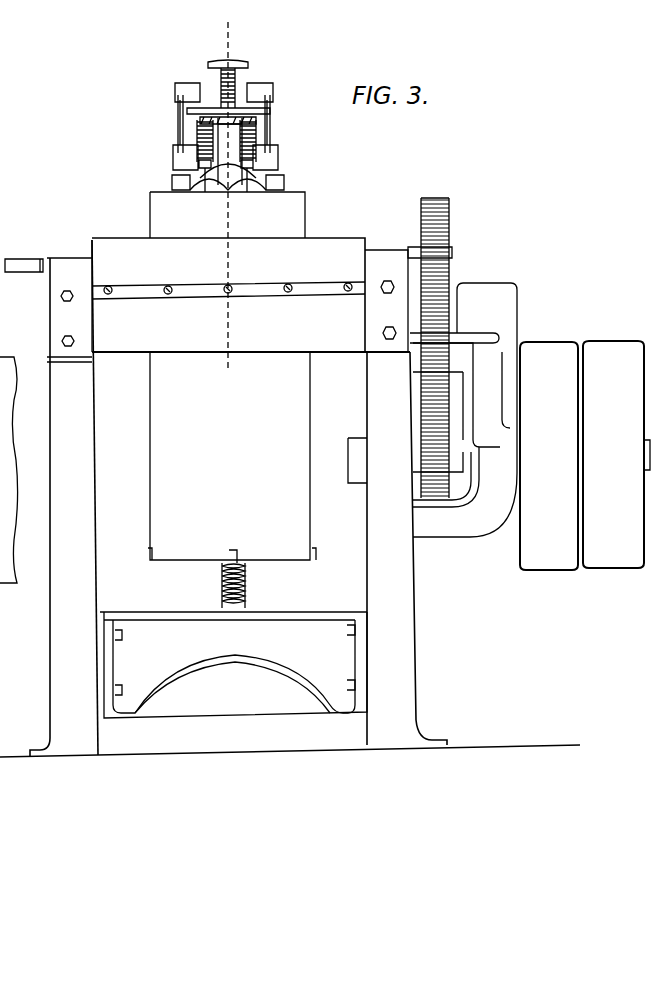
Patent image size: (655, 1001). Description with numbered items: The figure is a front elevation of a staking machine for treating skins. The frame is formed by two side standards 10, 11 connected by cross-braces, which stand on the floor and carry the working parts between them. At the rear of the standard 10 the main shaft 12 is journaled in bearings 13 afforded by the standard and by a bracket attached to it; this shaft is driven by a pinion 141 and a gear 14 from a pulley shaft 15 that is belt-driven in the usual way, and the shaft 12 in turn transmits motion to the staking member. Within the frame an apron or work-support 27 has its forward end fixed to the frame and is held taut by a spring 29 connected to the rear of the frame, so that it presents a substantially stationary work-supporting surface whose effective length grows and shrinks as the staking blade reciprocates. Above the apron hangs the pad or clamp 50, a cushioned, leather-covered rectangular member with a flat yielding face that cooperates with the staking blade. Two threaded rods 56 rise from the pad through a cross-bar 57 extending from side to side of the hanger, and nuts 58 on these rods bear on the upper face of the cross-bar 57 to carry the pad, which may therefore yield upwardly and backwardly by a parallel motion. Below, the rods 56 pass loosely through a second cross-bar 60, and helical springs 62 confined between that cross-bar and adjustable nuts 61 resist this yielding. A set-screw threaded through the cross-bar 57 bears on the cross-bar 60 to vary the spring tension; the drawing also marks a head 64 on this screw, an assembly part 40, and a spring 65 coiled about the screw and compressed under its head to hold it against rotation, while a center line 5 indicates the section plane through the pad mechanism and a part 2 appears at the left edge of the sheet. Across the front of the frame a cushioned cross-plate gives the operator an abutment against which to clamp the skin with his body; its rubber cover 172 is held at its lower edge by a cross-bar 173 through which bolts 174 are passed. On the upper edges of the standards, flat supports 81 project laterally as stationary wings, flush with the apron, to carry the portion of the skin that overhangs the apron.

The table 2 is at (60, 300).
The axis line 5 is at (226, 197).
The side standard 10 is at (408, 653).
The side standard 11 is at (60, 645).
The main shaft 12 is at (517, 312).
The bearings 13 is at (483, 292).
The gear 14 is at (432, 198).
The pulley shaft 15 is at (348, 468).
The apron 27 is at (155, 492).
The spring 29 is at (247, 587).
The cross bar 40 is at (248, 108).
The pad 50 is at (148, 217).
The threaded rods 56 is at (205, 186).
The cross-bar 57 is at (260, 120).
The nuts 58 is at (192, 104).
The cross-bar 60 is at (214, 122).
The adjustable nuts 61 is at (173, 162).
The helical springs 62 is at (200, 140).
The screw 64 is at (214, 68).
The spring 65 is at (240, 70).
The flat supports 81 is at (18, 259).
The pinion 141 is at (441, 500).
The rubber cover 172 is at (110, 250).
The cross-bar 173 is at (328, 282).
The bolts 174 is at (382, 292).